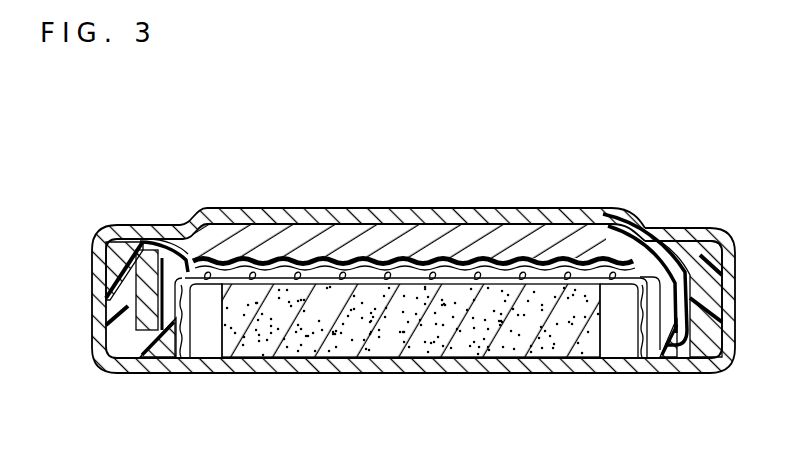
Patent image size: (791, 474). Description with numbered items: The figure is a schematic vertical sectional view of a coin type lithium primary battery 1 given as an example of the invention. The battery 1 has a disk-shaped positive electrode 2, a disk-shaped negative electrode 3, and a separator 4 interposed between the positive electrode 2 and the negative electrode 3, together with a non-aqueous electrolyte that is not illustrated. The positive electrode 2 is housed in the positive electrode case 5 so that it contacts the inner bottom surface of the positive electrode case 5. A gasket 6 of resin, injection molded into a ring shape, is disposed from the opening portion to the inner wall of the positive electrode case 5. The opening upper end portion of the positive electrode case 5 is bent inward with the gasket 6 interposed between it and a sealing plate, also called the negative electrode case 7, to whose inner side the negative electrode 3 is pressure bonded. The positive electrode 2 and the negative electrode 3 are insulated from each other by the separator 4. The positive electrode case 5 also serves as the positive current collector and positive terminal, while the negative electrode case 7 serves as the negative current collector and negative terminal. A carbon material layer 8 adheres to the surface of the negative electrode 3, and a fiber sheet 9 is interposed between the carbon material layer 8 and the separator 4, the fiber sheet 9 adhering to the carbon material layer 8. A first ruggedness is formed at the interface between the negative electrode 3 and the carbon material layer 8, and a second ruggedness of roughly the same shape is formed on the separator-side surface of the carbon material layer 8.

The coin type lithium primary battery 1 is at (627, 131).
The positive electrode 2 is at (322, 362).
The negative electrode 3 is at (374, 237).
The separator 4 is at (464, 283).
The positive electrode case 5 is at (633, 360).
The gasket 6 is at (693, 258).
The sealing plate (negative electrode case) 7 is at (496, 220).
The carbon material layer 8 is at (258, 260).
The fiber sheet 9 is at (157, 248).